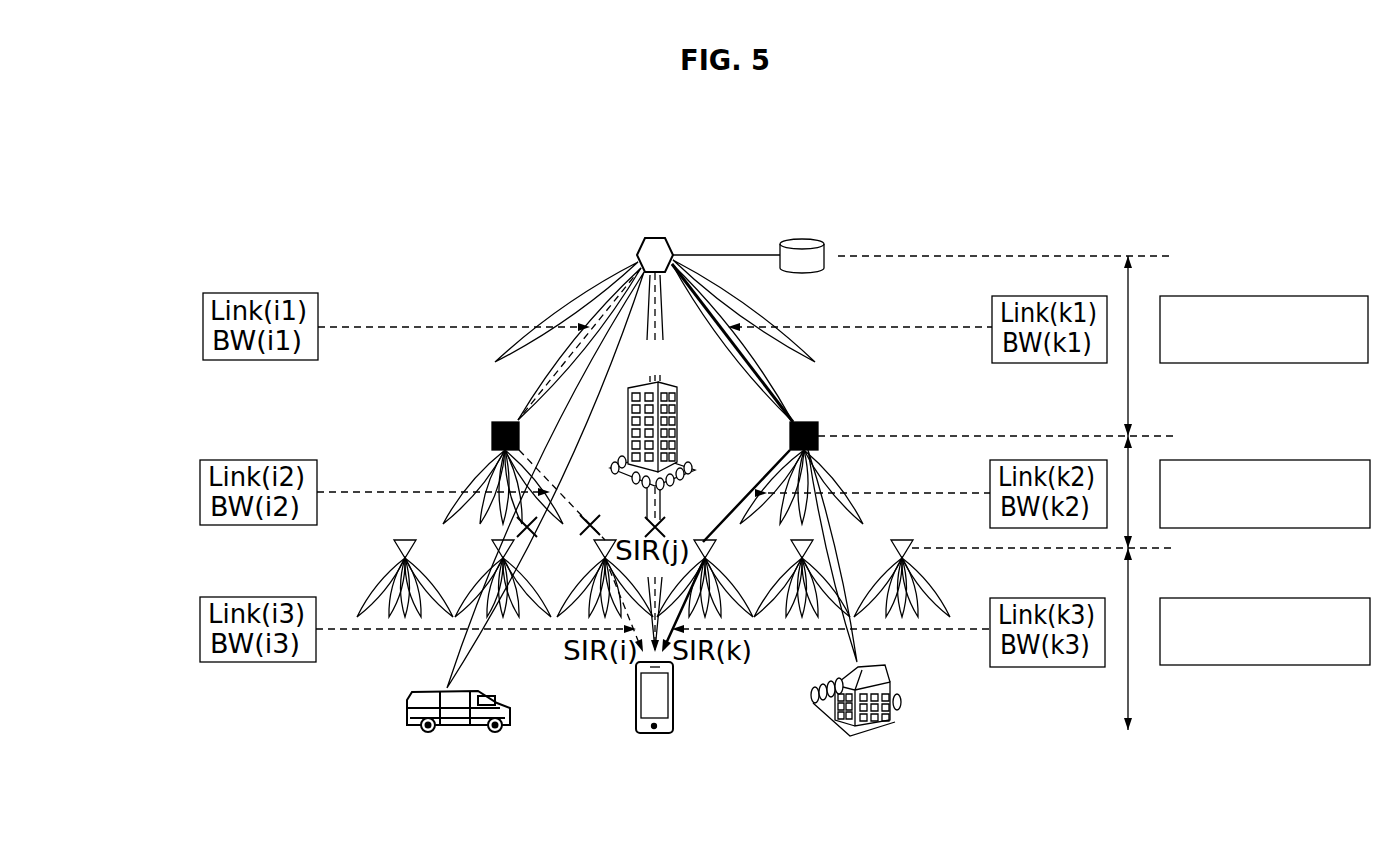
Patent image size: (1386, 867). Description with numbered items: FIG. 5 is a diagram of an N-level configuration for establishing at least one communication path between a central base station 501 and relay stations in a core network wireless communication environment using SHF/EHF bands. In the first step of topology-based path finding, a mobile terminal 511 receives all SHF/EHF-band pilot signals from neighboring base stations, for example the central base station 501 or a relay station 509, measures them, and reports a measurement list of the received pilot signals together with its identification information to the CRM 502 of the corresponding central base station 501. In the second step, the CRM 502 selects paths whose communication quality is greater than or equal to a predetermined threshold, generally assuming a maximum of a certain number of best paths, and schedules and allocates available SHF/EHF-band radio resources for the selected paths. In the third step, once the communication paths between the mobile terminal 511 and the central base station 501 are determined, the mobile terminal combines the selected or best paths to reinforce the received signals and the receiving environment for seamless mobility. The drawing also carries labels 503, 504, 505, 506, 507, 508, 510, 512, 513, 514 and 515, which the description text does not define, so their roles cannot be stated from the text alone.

The central base station 501 is at (633, 253).
The CRM 502 is at (820, 240).
The path(i) beam 503 is at (603, 312).
The path(j) beam 504 is at (660, 327).
The path(k) beam 505 is at (812, 364).
The relay station 506 is at (495, 422).
The relay link path 507 is at (567, 500).
The building obstacle 508 is at (680, 418).
The relay station 509 is at (602, 560).
The mobile group 510 is at (405, 710).
The mobile terminal 511 is at (640, 700).
The fixed group 512 is at (815, 712).
The cell hierarchy-1 513 is at (1265, 296).
The cell hierarchy-2 514 is at (1265, 460).
The cell hierarchy-3 515 is at (1265, 598).